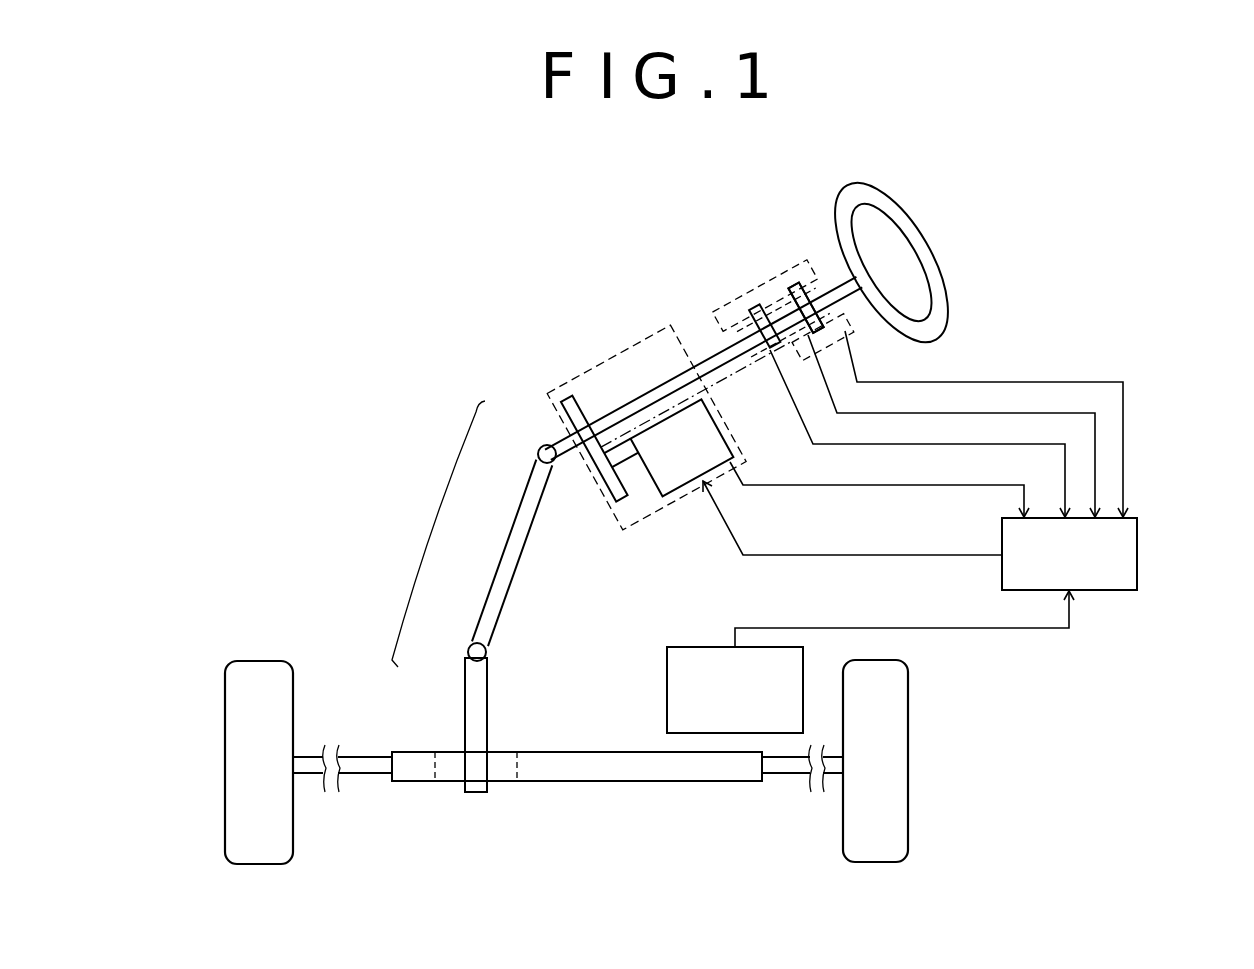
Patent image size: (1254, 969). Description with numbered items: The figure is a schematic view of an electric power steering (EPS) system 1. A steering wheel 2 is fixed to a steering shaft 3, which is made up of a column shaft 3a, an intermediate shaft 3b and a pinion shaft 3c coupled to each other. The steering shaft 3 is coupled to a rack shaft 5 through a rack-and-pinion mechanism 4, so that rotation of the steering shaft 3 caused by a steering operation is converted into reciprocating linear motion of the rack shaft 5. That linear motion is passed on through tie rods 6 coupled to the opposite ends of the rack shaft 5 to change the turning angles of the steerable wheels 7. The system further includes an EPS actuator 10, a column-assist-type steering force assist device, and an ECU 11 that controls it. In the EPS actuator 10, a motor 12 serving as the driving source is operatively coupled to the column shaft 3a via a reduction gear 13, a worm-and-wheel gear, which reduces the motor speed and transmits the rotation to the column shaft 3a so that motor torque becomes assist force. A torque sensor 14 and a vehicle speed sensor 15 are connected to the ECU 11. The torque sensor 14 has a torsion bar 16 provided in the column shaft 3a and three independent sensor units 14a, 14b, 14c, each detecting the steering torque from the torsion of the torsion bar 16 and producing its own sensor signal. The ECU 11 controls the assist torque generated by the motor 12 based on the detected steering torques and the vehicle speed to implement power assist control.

The electric power steering (EPS) system 1 is at (1080, 194).
The steering wheel 2 is at (931, 254).
The steering shaft 3 is at (438, 534).
The column shaft 3a is at (545, 447).
The intermediate shaft 3b is at (503, 552).
The pinion shaft 3c is at (467, 657).
The rack-and-pinion mechanism 4 is at (505, 757).
The rack shaft 5 is at (576, 752).
The tie rods 6 is at (366, 757).
The steerable wheels 7 is at (225, 769).
The EPS actuator 10 is at (592, 366).
The ECU 11 is at (1137, 556).
The motor 12 is at (662, 463).
The reduction gear 13 is at (601, 483).
The torque sensor 14 is at (686, 296).
The sensor unit 14a is at (847, 326).
The sensor unit 14b is at (822, 286).
The sensor unit 14c is at (777, 278).
The vehicle speed sensor 15 is at (686, 646).
The torsion bar 16 is at (753, 306).